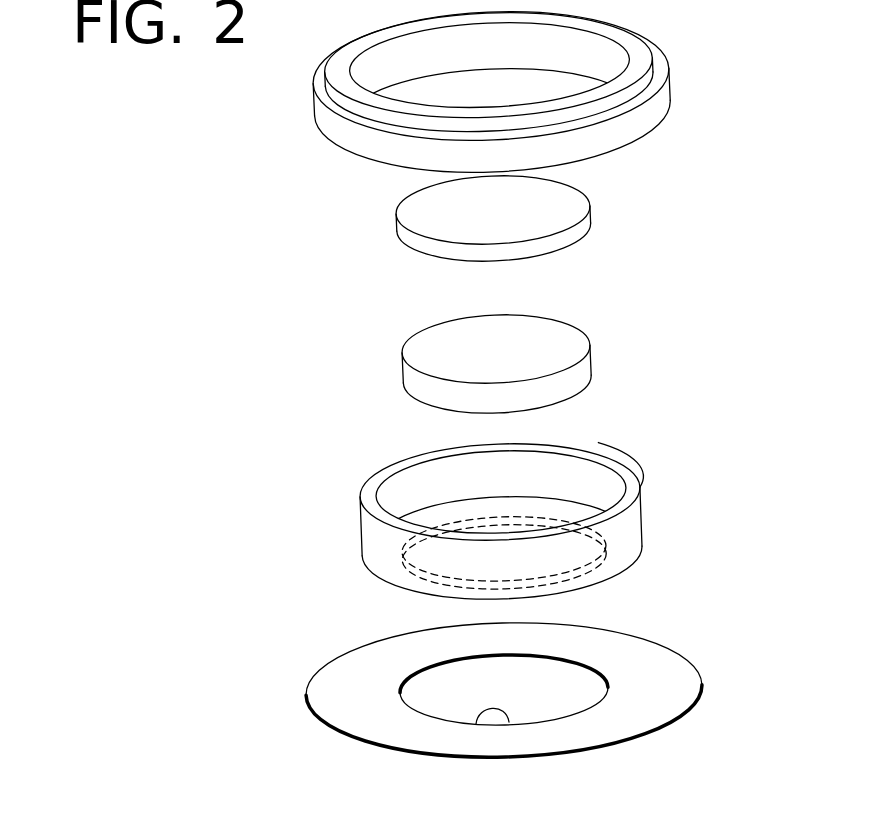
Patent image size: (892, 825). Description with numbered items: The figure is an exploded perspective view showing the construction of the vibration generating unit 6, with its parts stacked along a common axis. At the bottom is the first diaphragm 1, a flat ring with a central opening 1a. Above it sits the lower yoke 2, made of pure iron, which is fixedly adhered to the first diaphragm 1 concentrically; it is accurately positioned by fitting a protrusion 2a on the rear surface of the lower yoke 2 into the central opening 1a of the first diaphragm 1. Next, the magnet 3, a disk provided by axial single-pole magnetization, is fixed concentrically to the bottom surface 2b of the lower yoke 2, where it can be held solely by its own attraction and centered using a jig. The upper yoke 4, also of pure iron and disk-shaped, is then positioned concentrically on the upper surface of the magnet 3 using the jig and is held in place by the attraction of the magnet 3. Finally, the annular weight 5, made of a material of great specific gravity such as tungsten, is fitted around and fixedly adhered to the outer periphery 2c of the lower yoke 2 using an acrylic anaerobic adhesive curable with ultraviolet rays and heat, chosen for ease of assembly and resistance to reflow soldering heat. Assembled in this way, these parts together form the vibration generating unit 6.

The first diaphragm 1 is at (677, 685).
The central opening of the first diaphragm 1a is at (509, 720).
The lower yoke 2 is at (622, 543).
The protrusion 2a is at (583, 592).
The bottom surface of the lower yoke 2b is at (567, 512).
The outer periphery of the lower yoke 2c is at (640, 500).
The magnet 3 is at (565, 340).
The upper yoke 4 is at (565, 195).
The annular weight 5 is at (628, 53).
The vibration generating unit 6 is at (688, 298).